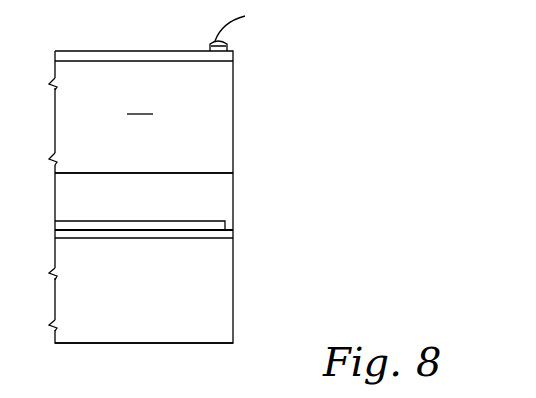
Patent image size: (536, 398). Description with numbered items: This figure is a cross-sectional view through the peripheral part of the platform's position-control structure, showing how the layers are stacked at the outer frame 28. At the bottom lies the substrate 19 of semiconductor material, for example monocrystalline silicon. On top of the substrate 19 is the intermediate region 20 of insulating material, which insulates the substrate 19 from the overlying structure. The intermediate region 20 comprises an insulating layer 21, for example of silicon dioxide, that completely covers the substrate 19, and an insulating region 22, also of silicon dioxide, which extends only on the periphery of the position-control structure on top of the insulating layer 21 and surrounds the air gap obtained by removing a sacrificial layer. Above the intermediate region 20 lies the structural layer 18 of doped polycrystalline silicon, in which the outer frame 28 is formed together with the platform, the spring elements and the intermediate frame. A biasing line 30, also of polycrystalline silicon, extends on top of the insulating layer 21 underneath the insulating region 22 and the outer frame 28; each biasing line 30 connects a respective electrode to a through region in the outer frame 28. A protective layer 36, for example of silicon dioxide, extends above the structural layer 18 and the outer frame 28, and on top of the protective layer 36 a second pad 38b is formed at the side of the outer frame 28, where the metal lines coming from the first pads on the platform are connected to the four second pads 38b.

The structural layer 18 is at (216, 103).
The substrate 19 is at (217, 298).
The intermediate region 20 is at (241, 215).
The insulating layer 21 is at (233, 232).
The insulating region 22 is at (220, 188).
The outer frame 28 is at (142, 102).
The biasing line 30 is at (103, 230).
The protective layer 36 is at (82, 57).
The second pad 38b is at (228, 45).